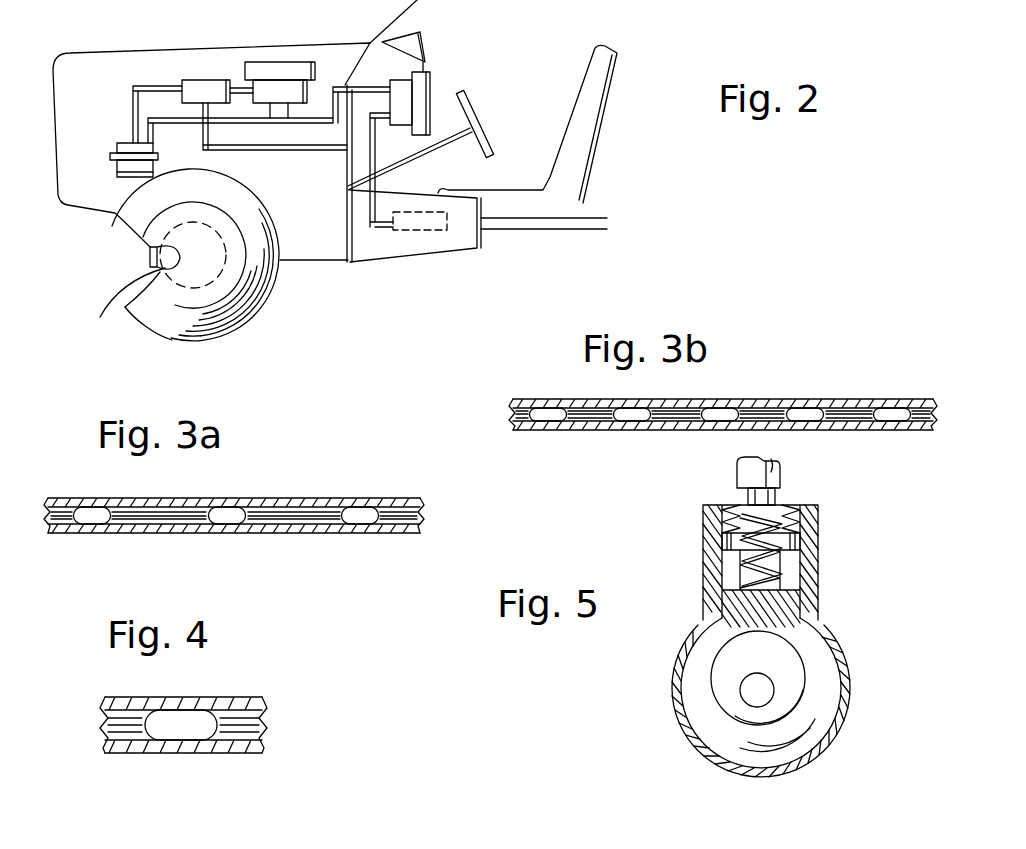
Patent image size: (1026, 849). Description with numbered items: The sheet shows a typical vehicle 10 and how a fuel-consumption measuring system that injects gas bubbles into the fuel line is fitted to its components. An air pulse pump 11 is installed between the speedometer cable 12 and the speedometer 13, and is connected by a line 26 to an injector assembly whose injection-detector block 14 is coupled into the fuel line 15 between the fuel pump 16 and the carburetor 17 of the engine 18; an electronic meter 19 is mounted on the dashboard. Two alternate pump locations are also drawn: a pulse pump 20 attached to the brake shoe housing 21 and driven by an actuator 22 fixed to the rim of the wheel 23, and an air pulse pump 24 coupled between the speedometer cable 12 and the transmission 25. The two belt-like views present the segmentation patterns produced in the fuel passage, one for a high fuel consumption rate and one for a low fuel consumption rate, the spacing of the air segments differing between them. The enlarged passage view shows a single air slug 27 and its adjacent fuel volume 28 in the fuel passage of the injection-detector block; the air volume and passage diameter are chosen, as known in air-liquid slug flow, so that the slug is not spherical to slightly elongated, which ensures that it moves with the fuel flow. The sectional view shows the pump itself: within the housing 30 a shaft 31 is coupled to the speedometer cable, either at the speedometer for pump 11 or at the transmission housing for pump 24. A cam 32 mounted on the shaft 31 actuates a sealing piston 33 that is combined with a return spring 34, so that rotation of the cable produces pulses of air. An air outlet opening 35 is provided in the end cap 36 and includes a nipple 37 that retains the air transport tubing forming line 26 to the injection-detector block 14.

In FIG. 2, the vehicle 10 is at (75, 207).
In FIG. 2, the air pulse pump 11 is at (401, 77).
In FIG. 2, the speedometer cable 12 is at (382, 182).
In FIG. 2, the speedometer 13 is at (433, 78).
In FIG. 2, the injection-detector block 14 is at (214, 68).
In FIG. 2, the fuel line 15 is at (152, 83).
In FIG. 2, the fuel pump 16 is at (120, 142).
In FIG. 2, the carburetor 17 is at (305, 62).
In FIG. 2, the engine 18 is at (320, 264).
In FIG. 2, the electronic meter 19 is at (425, 42).
In FIG. 2, the pulse pump 20 is at (150, 258).
In FIG. 2, the brake shoe housing 21 is at (125, 303).
In FIG. 2, the actuator 22 is at (167, 335).
In FIG. 2, the wheel 23 is at (264, 310).
In FIG. 2, the air pulse pump 24 is at (418, 233).
In FIG. 2, the transmission 25 is at (482, 242).
In FIG. 2, the line 26 is at (366, 42).
In FIG. 5, the line 26 is at (737, 473).
In FIG. 4, the air slug 27 is at (175, 728).
In FIG. 4, the fuel volume 28 is at (237, 728).
In FIG. 5, the housing 30 is at (683, 727).
In FIG. 5, the shaft 31 is at (777, 680).
In FIG. 5, the cam 32 is at (807, 700).
In FIG. 5, the sealing piston 33 is at (783, 607).
In FIG. 5, the return spring 34 is at (767, 575).
In FIG. 5, the air outlet opening 35 is at (770, 512).
In FIG. 5, the end cap 36 is at (800, 528).
In FIG. 5, the nipple 37 is at (750, 497).